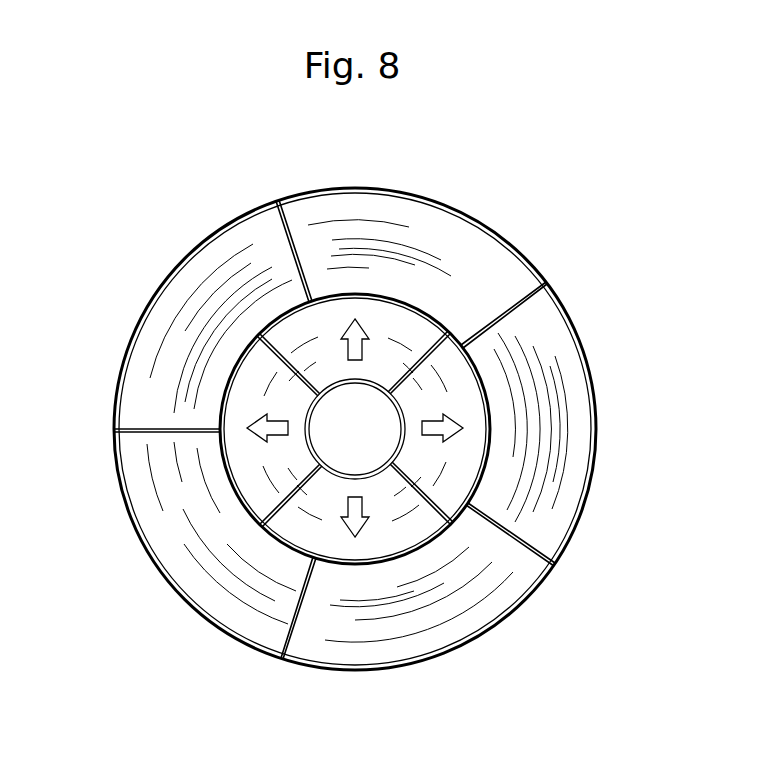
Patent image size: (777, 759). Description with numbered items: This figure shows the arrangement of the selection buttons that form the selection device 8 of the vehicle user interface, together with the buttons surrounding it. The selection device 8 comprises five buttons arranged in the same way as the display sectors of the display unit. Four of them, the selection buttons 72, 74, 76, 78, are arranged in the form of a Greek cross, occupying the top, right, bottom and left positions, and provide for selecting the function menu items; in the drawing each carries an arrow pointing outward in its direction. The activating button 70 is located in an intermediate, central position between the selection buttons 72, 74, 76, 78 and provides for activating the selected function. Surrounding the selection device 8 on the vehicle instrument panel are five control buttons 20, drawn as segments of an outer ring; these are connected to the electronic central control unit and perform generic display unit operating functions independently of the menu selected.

The selection device 8 is at (500, 420).
The control buttons 20 is at (331, 205).
The activating button 70 is at (342, 415).
The selection button 72 is at (372, 320).
The selection button 74 is at (457, 460).
The selection button 76 is at (373, 535).
The selection button 78 is at (252, 460).